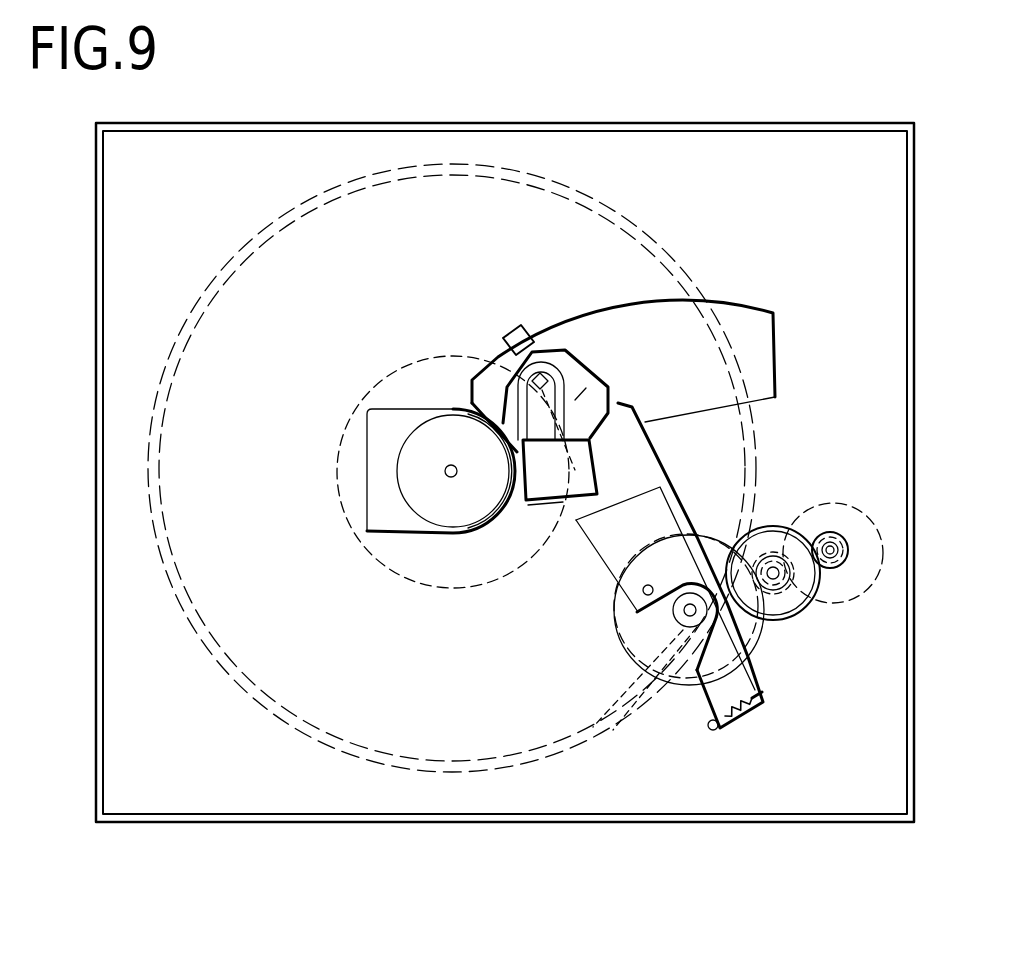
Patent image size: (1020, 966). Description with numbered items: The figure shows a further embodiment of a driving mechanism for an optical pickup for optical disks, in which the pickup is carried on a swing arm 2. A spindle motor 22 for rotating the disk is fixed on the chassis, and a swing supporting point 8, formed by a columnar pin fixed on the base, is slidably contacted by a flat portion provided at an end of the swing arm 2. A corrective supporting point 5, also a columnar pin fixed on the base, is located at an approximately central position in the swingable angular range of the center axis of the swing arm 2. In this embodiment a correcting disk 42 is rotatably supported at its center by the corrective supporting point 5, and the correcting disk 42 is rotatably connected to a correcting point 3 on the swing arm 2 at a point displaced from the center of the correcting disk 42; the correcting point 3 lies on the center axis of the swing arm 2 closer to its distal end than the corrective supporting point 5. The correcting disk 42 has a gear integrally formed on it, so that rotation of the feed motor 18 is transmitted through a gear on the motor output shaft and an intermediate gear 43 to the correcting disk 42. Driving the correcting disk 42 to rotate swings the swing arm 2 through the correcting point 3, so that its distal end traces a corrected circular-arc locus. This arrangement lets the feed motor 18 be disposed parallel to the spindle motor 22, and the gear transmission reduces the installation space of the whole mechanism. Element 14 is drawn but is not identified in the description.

The swing arm 2 is at (597, 540).
The correcting point 3 is at (642, 595).
The corrective supporting point 5 is at (683, 616).
The swing supporting point 8 is at (713, 731).
The small gear 14 is at (845, 568).
The feed motor 18 is at (830, 508).
The spindle motor 22 is at (437, 428).
The correcting disk 42 is at (683, 688).
The intermediate gear 43 is at (797, 608).